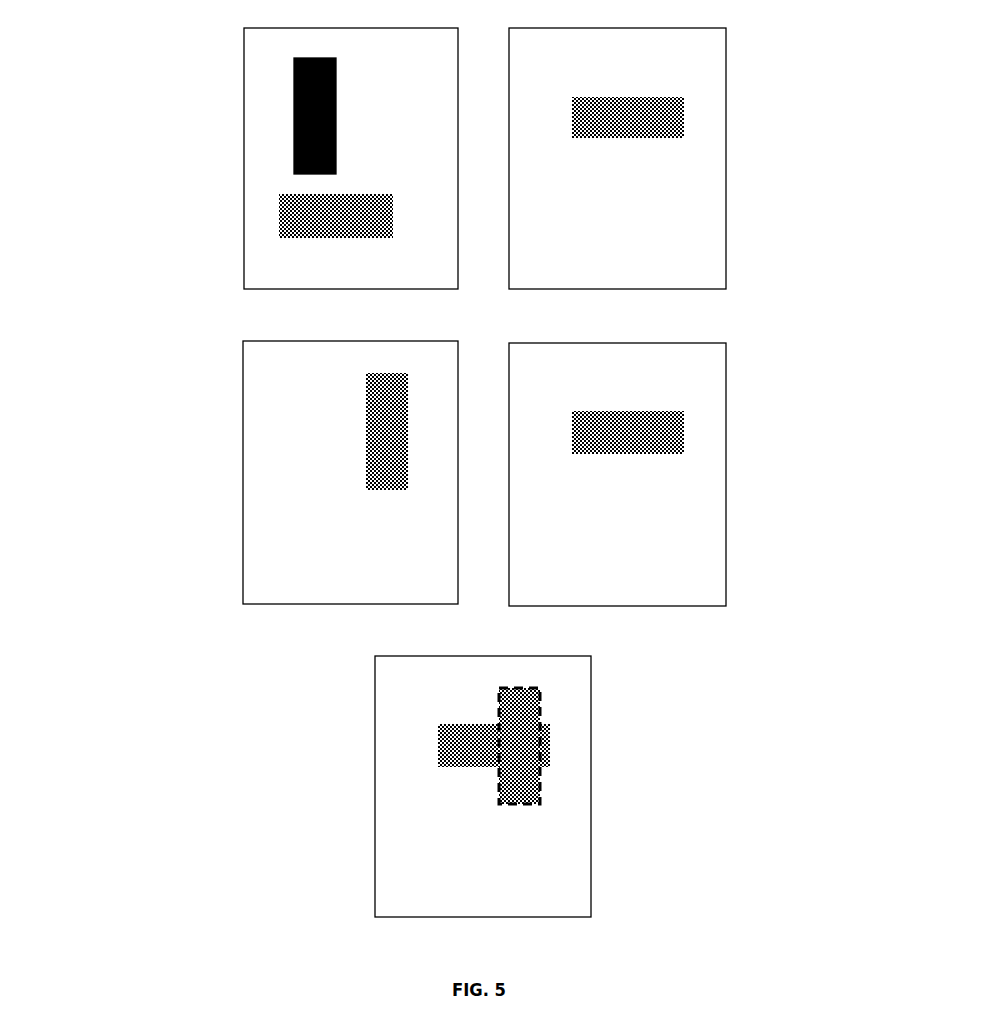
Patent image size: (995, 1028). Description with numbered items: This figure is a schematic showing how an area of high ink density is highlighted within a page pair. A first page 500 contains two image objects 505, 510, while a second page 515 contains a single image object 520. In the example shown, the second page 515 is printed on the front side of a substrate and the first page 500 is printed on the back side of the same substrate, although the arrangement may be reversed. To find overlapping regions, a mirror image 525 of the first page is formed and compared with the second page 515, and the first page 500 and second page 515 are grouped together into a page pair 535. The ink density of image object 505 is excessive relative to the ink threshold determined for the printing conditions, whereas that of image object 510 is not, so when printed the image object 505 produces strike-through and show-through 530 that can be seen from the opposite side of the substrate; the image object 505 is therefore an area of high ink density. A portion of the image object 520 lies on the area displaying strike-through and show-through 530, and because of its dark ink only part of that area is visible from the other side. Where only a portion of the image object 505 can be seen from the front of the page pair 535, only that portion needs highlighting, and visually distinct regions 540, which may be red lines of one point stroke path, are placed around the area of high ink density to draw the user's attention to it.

The first page 500 is at (244, 48).
The image object 505 is at (294, 113).
The image object 510 is at (282, 222).
The second page 515 is at (726, 51).
The image object 520 is at (684, 128).
The mirror image of first page 525 is at (243, 363).
The strike-through and show-through 530 is at (373, 457).
The page pair 535 is at (591, 681).
The visually distinct region 540 is at (639, 746).